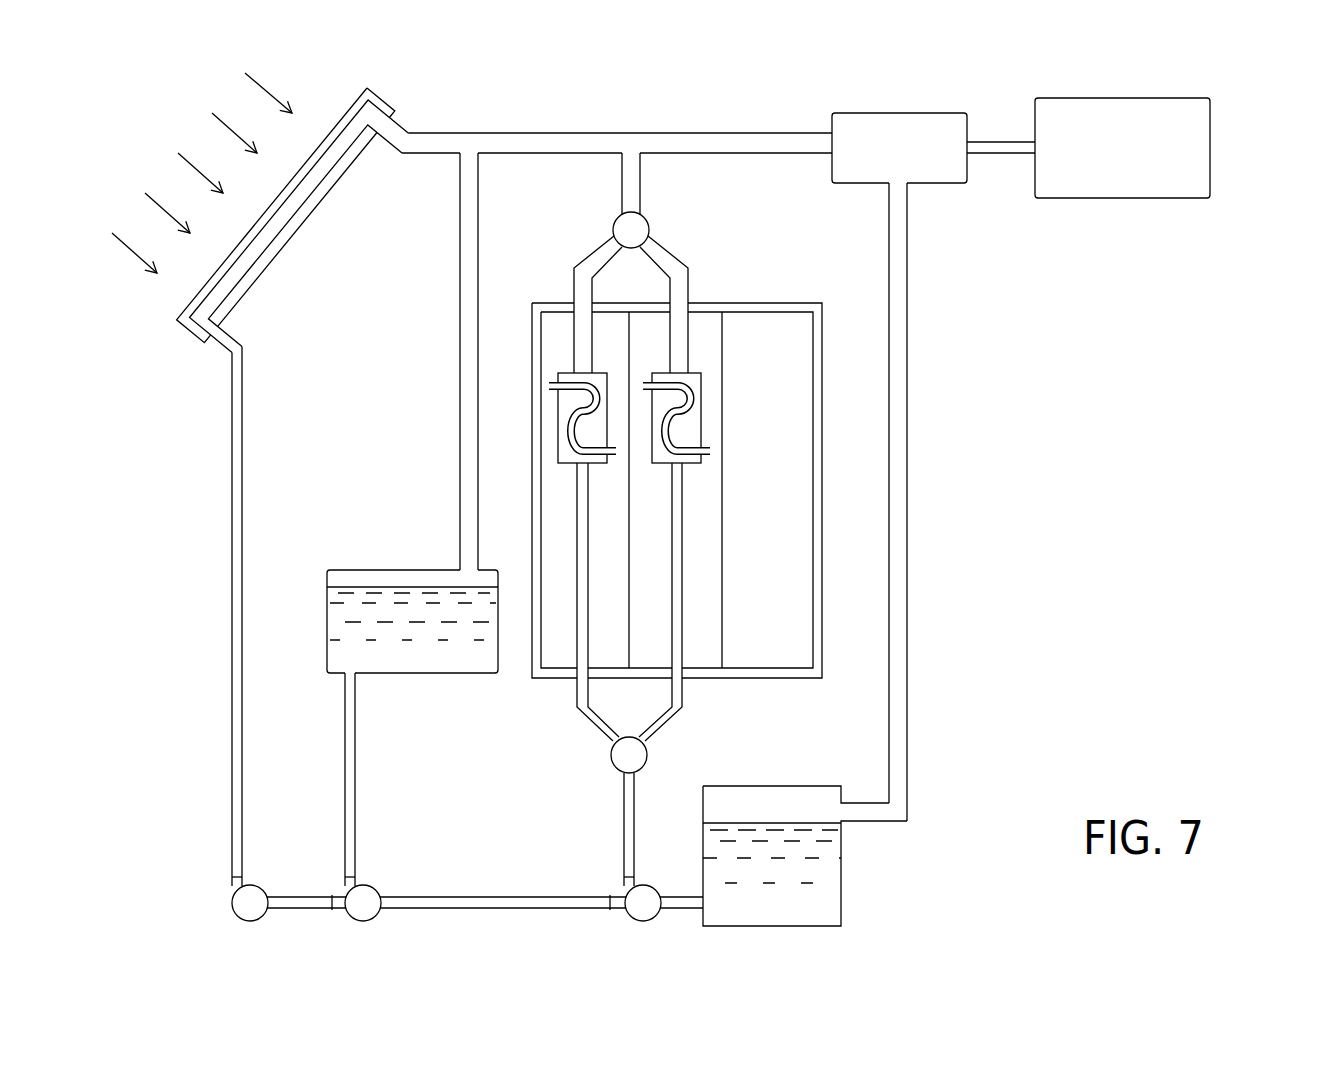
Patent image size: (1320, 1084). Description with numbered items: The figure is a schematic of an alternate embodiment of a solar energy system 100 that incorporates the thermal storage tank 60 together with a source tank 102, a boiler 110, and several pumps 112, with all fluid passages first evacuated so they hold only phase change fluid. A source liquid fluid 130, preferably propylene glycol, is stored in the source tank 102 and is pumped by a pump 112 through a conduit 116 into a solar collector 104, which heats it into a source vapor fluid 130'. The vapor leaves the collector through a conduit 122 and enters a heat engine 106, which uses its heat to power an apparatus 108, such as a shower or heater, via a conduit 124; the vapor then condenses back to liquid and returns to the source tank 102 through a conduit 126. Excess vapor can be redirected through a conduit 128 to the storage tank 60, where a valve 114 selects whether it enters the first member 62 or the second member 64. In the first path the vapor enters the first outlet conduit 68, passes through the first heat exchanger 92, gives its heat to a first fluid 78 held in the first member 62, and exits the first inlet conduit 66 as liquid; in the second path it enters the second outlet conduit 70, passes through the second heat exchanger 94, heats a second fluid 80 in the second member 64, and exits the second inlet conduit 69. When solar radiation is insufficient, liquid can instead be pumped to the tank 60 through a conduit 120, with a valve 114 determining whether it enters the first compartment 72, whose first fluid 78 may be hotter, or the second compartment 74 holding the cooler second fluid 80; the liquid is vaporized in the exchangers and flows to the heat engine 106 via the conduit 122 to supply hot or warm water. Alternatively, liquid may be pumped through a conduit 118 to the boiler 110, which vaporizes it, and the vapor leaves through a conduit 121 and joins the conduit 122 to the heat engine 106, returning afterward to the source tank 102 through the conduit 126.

The thermal storage tank 60 is at (838, 320).
The first member 62 is at (645, 512).
The second member 64 is at (548, 520).
The first inlet conduit 66 is at (677, 632).
The first outlet conduit 68 is at (678, 307).
The second inlet conduit 69 is at (582, 645).
The second outlet conduit 70 is at (583, 313).
The first compartment 72 is at (706, 595).
The second compartment 74 is at (805, 548).
The first fluid 78 is at (713, 360).
The second fluid 80 is at (797, 349).
The first heat exchanger 92 is at (695, 409).
The second heat exchanger 94 is at (600, 407).
The solar energy system 100 is at (973, 823).
The source tank 102 is at (843, 836).
The solar collector 104 is at (188, 333).
The heat engine 106 is at (848, 112).
The apparatus 108 is at (1212, 148).
The boiler 110 is at (350, 648).
The pump 112 is at (378, 888).
The valve 114 is at (617, 218).
The conduit 116 is at (244, 498).
The conduit 118 is at (345, 788).
The conduit 120 is at (623, 838).
The conduit 121 is at (466, 312).
The conduit 122 is at (541, 143).
The conduit 124 is at (1000, 155).
The conduit 126 is at (897, 467).
The conduit 128 is at (634, 190).
The source liquid fluid 130 is at (813, 868).
The source vapor fluid 130' is at (329, 219).